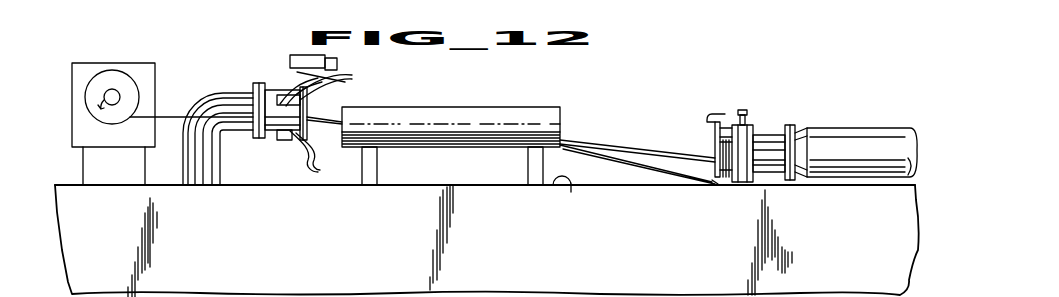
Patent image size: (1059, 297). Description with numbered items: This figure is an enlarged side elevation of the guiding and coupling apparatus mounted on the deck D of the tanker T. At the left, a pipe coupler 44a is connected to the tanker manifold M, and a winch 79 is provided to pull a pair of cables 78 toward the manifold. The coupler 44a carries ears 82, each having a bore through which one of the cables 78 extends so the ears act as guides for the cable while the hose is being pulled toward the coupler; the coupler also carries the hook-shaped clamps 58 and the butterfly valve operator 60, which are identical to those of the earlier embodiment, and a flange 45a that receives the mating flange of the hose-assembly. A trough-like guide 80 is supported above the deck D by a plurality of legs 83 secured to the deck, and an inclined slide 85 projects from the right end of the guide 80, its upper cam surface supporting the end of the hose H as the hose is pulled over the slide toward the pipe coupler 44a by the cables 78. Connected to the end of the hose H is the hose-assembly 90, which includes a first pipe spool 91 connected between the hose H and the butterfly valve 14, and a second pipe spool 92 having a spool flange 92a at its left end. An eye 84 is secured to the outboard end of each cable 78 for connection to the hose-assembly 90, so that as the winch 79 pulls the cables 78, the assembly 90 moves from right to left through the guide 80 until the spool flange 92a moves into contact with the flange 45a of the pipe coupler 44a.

The winch 79 is at (87, 60).
The cables 78 is at (168, 115).
The tanker manifold M is at (215, 105).
The butterfly valve operator 60 is at (282, 49).
The hook-shaped clamps 58 is at (328, 125).
The ears 82 is at (310, 108).
The pipe coupler 44a is at (270, 132).
The flange 45a is at (302, 137).
The trough-like guide 80 is at (457, 103).
The legs 83 is at (528, 163).
The inclined slide 85 is at (640, 166).
The deck D is at (566, 196).
The second pipe spool 92 is at (720, 135).
The spool flange 92a is at (710, 186).
The eye 84 is at (738, 186).
The first pipe spool 91 is at (774, 172).
The butterfly valve 14 is at (746, 128).
The hose-assembly 90 is at (803, 117).
The hose H is at (897, 135).
The tanker T is at (516, 262).